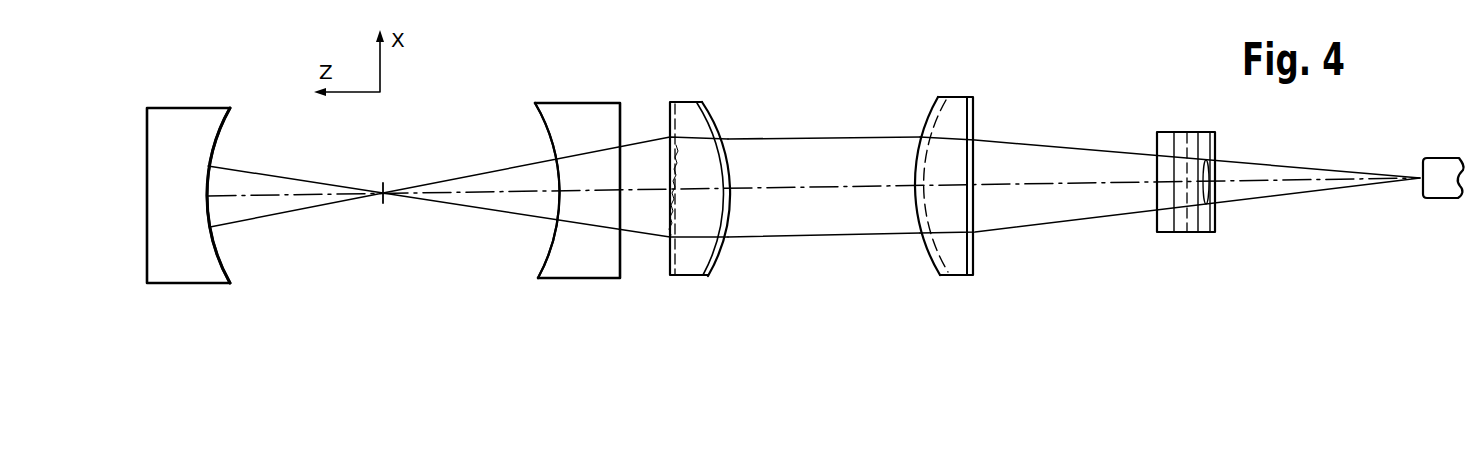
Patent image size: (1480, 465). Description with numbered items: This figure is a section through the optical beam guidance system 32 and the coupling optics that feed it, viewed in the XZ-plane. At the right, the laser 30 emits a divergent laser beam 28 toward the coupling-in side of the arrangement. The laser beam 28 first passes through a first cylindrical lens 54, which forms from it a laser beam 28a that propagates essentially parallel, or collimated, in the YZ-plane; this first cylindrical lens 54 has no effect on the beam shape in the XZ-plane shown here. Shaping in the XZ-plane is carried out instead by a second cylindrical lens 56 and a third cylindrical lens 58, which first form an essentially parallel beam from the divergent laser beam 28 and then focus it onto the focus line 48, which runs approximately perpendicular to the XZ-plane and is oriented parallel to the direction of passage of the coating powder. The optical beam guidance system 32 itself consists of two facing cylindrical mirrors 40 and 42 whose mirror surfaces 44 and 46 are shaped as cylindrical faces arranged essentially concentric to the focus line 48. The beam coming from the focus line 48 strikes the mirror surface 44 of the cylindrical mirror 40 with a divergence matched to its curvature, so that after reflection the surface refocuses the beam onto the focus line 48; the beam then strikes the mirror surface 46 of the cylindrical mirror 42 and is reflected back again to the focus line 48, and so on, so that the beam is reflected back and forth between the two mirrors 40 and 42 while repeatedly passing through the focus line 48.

The laser beam 28 is at (1318, 193).
The laser beam propagating essentially parallel in the YZ-plane 28a is at (822, 237).
The laser 30 is at (1440, 186).
The optical beam guidance system 32 is at (498, 98).
The cylindrical mirror 40 is at (172, 272).
The cylindrical mirror 42 is at (593, 262).
The mirror surface 44 is at (226, 262).
The mirror surface 46 is at (535, 260).
The focus line 48 is at (390, 200).
The first cylindrical lens 54 is at (1182, 222).
The second cylindrical lens 56 is at (955, 260).
The third cylindrical lens 58 is at (693, 262).